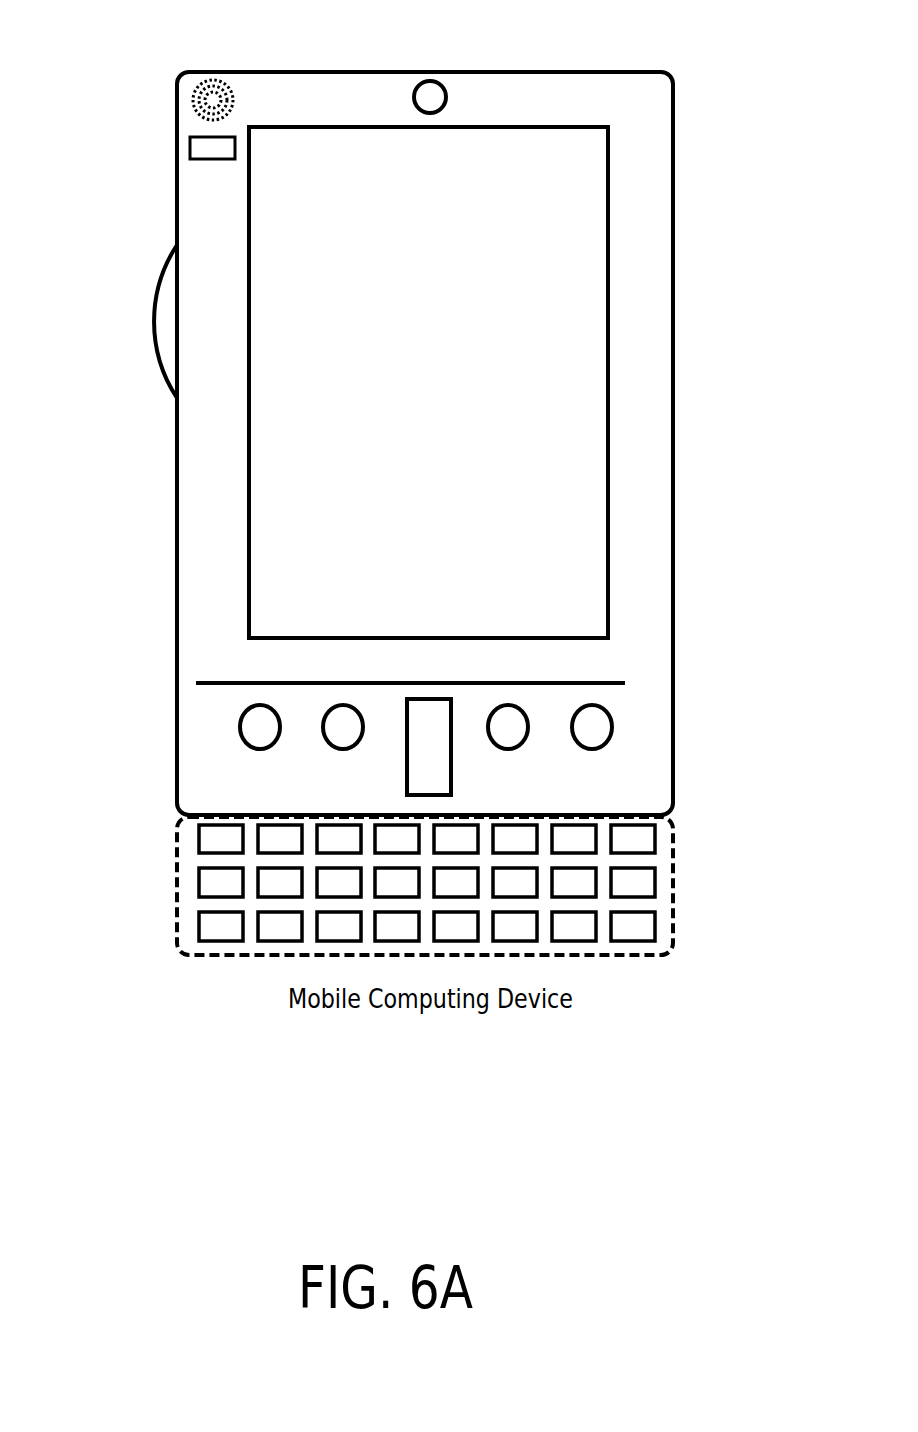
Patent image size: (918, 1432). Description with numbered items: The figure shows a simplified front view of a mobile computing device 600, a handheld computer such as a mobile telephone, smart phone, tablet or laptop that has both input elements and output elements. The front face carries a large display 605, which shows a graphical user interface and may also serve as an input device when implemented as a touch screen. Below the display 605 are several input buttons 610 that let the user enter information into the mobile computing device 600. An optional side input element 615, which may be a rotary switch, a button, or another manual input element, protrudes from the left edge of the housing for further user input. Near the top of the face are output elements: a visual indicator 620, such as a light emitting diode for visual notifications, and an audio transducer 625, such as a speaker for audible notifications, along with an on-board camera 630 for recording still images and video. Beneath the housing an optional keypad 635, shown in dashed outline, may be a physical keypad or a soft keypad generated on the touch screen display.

The mobile computing device 600 is at (675, 100).
The display 605 is at (278, 476).
The input buttons 610 is at (412, 757).
The side input element 615 is at (156, 305).
The visual indicator 620 is at (196, 146).
The audio transducer 625 is at (196, 91).
The on-board camera 630 is at (422, 83).
The keypad 635 is at (192, 887).